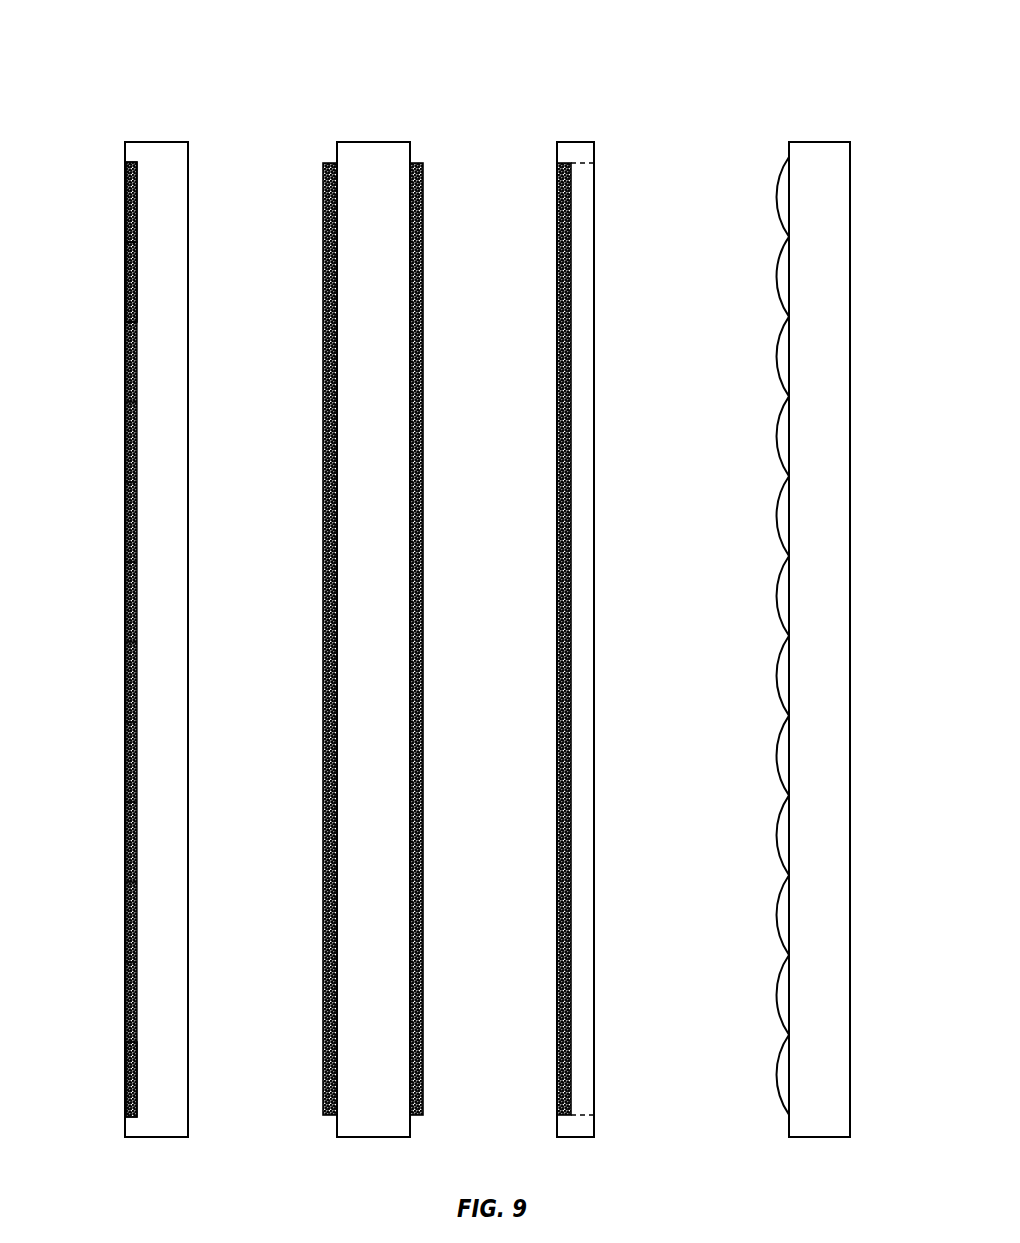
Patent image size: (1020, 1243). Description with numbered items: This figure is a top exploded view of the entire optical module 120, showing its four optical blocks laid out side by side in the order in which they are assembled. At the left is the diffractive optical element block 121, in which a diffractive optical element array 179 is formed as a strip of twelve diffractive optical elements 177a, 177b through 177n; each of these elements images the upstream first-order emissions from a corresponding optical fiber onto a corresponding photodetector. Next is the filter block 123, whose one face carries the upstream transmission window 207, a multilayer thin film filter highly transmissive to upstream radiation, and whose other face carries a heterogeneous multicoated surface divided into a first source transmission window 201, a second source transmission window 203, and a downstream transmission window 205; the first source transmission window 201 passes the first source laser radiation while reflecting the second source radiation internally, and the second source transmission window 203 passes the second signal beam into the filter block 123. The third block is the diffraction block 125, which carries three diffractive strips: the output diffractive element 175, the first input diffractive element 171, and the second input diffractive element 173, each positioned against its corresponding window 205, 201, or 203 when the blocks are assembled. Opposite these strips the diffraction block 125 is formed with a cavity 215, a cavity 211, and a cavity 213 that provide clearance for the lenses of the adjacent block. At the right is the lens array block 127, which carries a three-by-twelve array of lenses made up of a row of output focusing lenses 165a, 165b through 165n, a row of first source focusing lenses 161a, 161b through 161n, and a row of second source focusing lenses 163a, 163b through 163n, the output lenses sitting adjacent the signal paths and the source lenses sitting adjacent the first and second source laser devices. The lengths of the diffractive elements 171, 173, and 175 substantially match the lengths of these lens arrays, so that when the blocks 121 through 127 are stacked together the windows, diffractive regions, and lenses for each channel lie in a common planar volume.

The optical module 120 is at (180, 42).
The diffractive optical element block 121 is at (188, 203).
The filter block 123 is at (337, 158).
The diffraction block 125 is at (594, 152).
The lens array block 127 is at (850, 362).
The diffractive optical element 177a is at (126, 203).
The diffractive optical element 177b is at (126, 283).
The diffractive optical element 177n is at (126, 1081).
The diffractive optical element array 179 is at (126, 1122).
The upstream transmission window 207 is at (323, 498).
The downstream transmission window 205 is at (481, 639).
The first source transmission window 201 is at (481, 639).
The second source transmission window 203 is at (423, 238).
The output diffractive element 175 is at (499, 639).
The first input diffractive element 171 is at (499, 639).
The second input diffractive element 173 is at (557, 362).
The cavity 215 is at (644, 639).
The cavity 211 is at (644, 639).
The cavity 213 is at (580, 432).
The output focusing lens 165a is at (695, 217).
The first source focusing lens 161a is at (695, 217).
The second source focusing lens 163a is at (776, 198).
The output focusing lens 165b is at (695, 298).
The first source focusing lens 161b is at (695, 298).
The second source focusing lens 163b is at (776, 277).
The output focusing lens 165n is at (695, 1093).
The first source focusing lens 161n is at (695, 1093).
The second source focusing lens 163n is at (776, 1075).